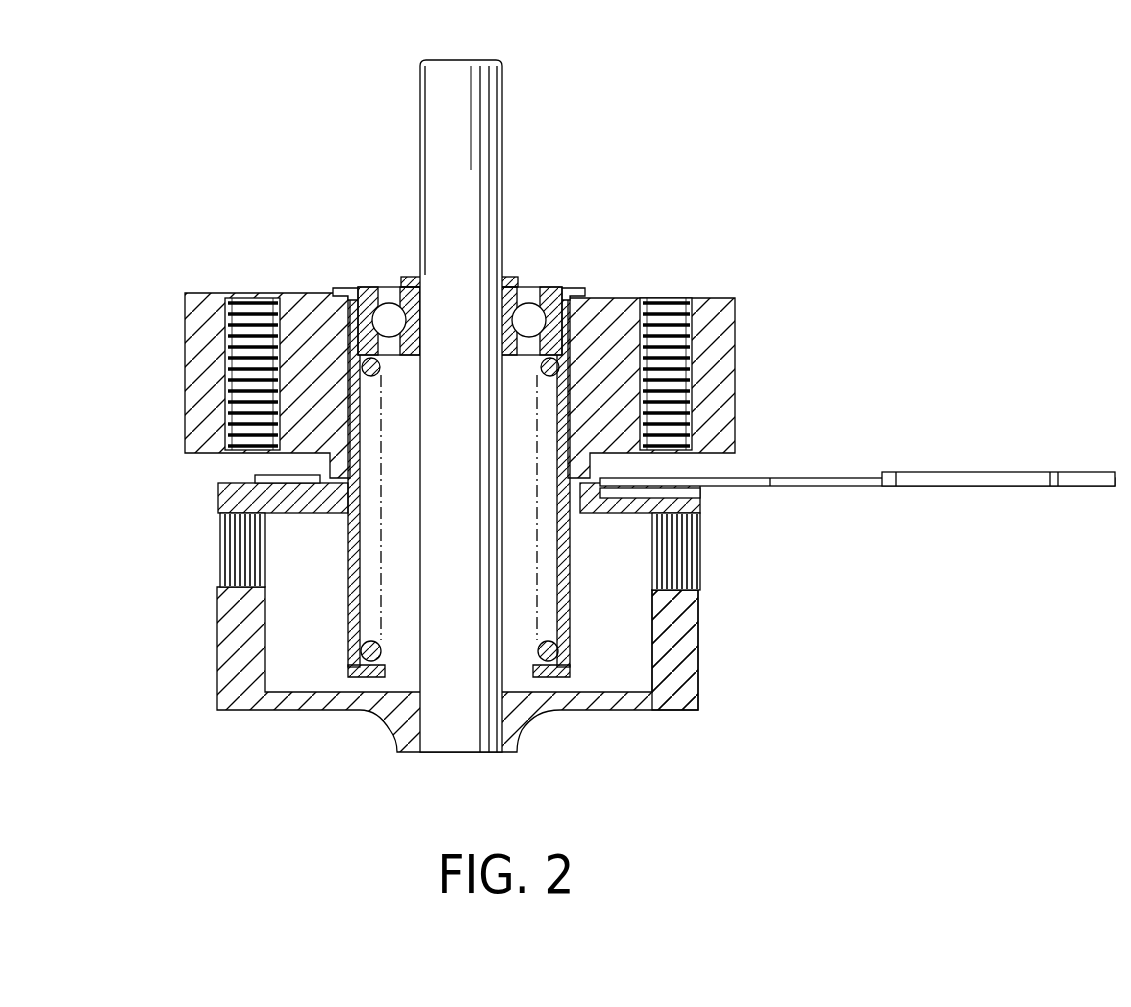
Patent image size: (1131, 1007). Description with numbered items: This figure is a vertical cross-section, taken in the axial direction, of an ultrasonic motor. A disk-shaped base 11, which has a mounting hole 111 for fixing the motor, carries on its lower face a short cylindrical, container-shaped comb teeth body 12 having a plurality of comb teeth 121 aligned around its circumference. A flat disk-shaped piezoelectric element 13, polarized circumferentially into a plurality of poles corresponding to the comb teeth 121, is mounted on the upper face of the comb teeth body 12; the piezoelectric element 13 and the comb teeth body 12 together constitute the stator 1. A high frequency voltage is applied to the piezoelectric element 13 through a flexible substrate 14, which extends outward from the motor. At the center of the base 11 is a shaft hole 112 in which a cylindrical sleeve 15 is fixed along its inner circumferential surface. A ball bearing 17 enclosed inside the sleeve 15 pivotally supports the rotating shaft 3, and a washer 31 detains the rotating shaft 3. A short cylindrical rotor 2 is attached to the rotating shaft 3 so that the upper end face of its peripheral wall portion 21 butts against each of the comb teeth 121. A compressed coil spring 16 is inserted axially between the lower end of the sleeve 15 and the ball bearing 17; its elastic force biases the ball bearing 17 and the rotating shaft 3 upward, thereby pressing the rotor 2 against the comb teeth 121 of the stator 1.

The stator 1 is at (482, 360).
The base 11 is at (722, 380).
The mounting hole 111 is at (242, 300).
The shaft hole 112 is at (350, 296).
The comb teeth body 12 is at (640, 512).
The comb teeth 121 is at (702, 550).
The piezoelectric element 13 is at (700, 494).
The flexible substrate 14 is at (848, 478).
The sleeve 15 is at (441, 457).
The compressed coil spring 16 is at (380, 645).
The ball bearing 17 is at (530, 306).
The rotor 2 is at (478, 679).
The peripheral wall portion 21 is at (688, 652).
The rotating shaft 3 is at (502, 112).
The washer 31 is at (408, 280).